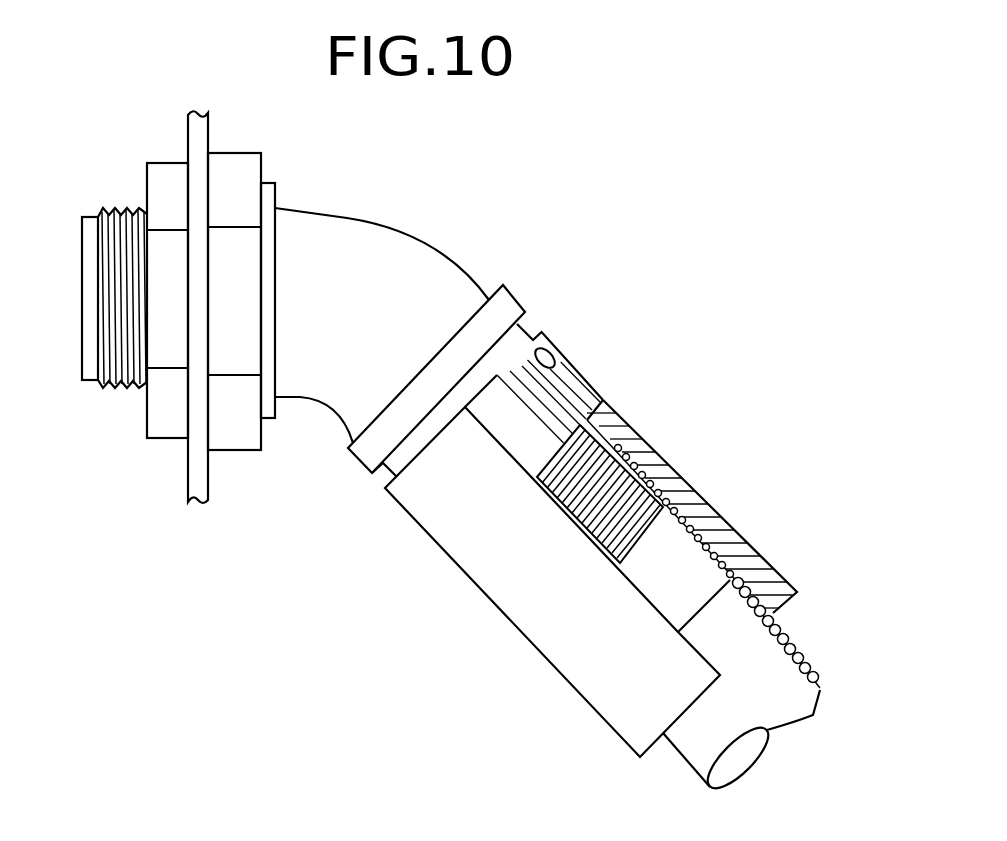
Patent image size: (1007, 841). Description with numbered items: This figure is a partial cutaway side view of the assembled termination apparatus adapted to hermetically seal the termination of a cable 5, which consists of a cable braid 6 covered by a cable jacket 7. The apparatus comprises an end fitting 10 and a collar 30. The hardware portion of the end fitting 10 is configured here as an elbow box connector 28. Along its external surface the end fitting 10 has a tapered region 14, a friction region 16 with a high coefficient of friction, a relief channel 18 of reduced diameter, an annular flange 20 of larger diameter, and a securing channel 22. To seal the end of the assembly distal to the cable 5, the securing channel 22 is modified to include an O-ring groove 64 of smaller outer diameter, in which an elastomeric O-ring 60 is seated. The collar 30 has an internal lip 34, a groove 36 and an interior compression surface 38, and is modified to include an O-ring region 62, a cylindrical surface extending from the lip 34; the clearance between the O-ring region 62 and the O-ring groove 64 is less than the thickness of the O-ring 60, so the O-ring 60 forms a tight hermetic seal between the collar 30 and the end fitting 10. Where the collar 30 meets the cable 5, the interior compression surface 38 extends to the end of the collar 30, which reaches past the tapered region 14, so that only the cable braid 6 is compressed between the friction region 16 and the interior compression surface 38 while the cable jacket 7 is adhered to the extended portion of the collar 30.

The end fitting 10 is at (685, 577).
The elbow box connector 28 is at (335, 212).
The O-ring region 62 is at (553, 338).
The O-ring 60 is at (567, 350).
The securing channel 22 is at (580, 373).
The flange 20 is at (595, 392).
The relief channel 18 is at (600, 412).
The friction region 16 is at (640, 452).
The tapered region 14 is at (707, 537).
The interior compression surface 38 is at (610, 452).
The O-ring groove 64 is at (530, 373).
The lip 34 is at (555, 383).
The groove 36 is at (572, 397).
The collar 30 is at (682, 480).
The cable jacket 7 is at (813, 642).
The cable 5 is at (825, 672).
The cable braid 6 is at (822, 688).